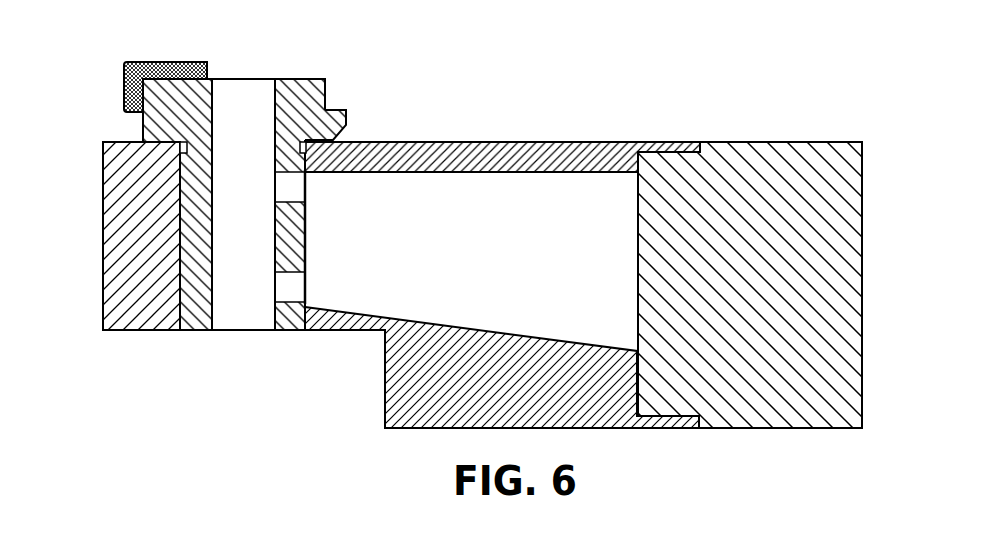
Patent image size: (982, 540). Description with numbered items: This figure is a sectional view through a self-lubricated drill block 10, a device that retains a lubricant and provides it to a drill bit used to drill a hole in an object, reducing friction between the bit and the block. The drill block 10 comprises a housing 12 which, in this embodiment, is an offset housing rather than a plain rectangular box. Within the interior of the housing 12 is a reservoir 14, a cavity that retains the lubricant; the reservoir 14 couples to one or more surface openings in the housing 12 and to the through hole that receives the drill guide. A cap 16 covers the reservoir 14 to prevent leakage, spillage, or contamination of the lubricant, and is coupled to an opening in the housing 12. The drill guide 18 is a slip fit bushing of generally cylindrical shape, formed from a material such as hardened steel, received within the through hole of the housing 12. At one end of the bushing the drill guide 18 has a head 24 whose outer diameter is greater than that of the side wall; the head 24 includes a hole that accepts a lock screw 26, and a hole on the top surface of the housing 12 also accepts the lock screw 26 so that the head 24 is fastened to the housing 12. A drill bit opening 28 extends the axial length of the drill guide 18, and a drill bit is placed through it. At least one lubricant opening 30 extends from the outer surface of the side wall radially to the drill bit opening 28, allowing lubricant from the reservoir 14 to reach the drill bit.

The self-lubricated drill block 10 is at (461, 221).
The housing 12 is at (100, 238).
The reservoir 14 is at (484, 192).
The cap 16 is at (762, 150).
The drill guide 18 is at (354, 101).
The head 24 is at (268, 180).
The lock screw 26 is at (150, 61).
The drill bit opening 28 is at (244, 87).
The lubricant opening 30 is at (308, 186).